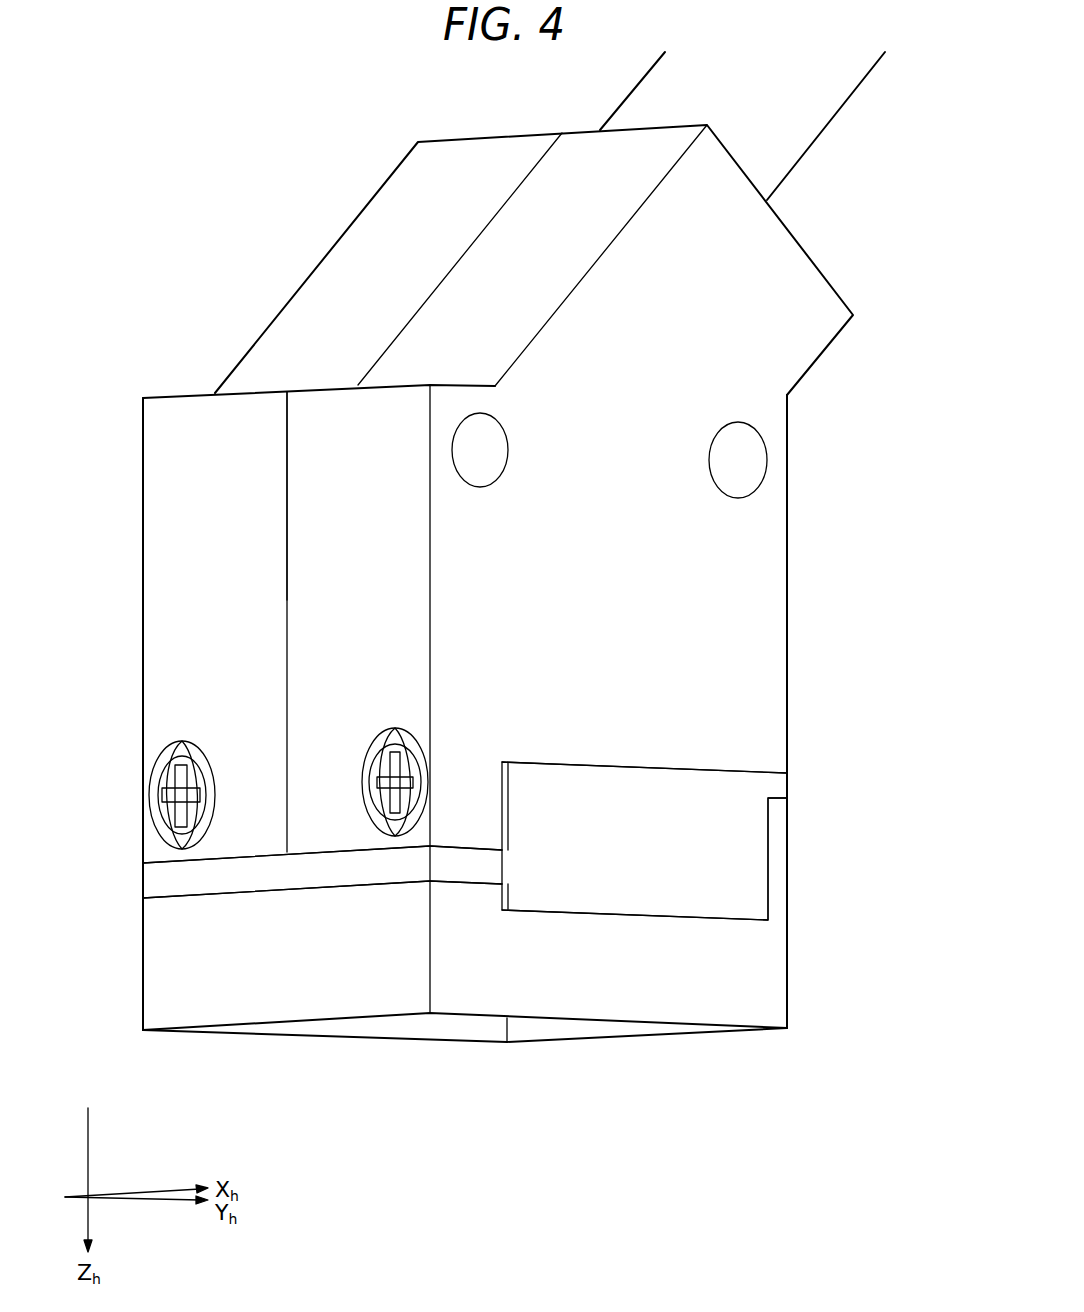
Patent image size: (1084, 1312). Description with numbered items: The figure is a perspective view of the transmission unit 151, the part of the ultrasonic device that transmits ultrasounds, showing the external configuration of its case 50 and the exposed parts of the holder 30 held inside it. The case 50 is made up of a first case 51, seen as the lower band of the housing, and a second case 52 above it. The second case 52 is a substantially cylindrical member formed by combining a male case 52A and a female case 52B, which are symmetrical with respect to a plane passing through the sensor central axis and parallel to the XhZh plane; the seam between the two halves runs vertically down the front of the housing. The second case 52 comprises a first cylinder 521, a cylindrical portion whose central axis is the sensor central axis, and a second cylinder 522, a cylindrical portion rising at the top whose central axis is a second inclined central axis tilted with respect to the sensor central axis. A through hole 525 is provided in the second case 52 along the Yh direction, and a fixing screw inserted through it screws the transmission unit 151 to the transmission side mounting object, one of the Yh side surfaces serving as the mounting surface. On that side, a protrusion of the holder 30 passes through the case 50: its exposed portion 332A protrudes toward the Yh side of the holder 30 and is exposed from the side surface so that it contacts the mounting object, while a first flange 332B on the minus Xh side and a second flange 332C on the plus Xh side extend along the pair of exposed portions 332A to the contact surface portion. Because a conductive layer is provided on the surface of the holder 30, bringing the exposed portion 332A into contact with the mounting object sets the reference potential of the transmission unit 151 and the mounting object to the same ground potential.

The second cylinder 522 is at (370, 213).
The first cylinder 521 is at (188, 570).
The second case 52 is at (143, 840).
The male case 52A is at (172, 410).
The female case 52B is at (323, 410).
The through hole 525 is at (492, 450).
The transmission unit 151 is at (811, 594).
The case 50 is at (90, 823).
The first case 51 is at (143, 935).
The holder 30 is at (739, 844).
The exposed portion 332A is at (742, 881).
The first flange 332B is at (300, 870).
The second flange 332C is at (787, 786).